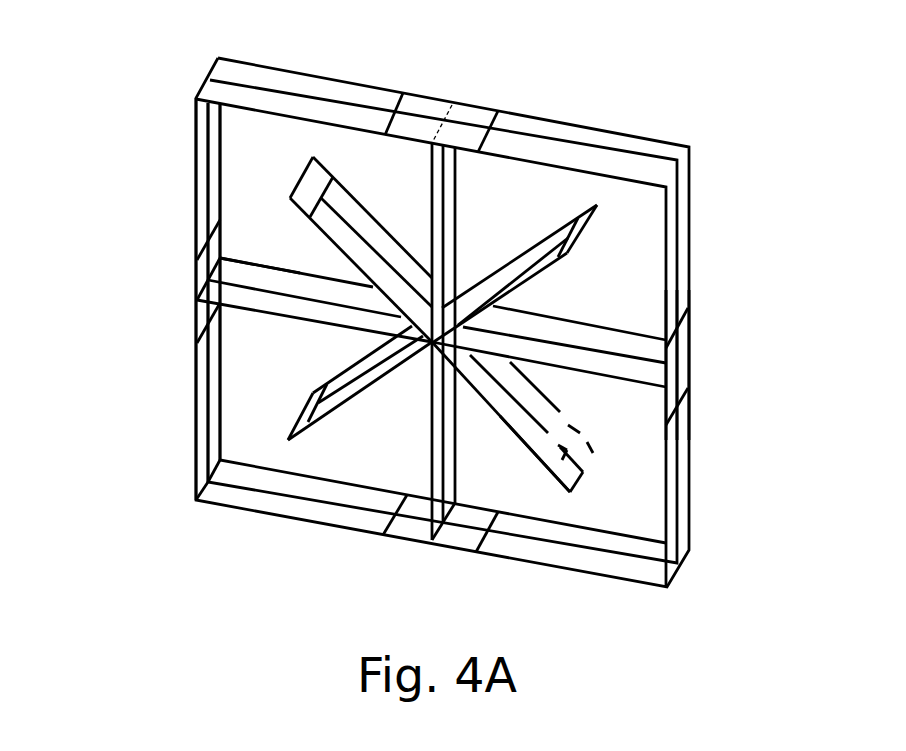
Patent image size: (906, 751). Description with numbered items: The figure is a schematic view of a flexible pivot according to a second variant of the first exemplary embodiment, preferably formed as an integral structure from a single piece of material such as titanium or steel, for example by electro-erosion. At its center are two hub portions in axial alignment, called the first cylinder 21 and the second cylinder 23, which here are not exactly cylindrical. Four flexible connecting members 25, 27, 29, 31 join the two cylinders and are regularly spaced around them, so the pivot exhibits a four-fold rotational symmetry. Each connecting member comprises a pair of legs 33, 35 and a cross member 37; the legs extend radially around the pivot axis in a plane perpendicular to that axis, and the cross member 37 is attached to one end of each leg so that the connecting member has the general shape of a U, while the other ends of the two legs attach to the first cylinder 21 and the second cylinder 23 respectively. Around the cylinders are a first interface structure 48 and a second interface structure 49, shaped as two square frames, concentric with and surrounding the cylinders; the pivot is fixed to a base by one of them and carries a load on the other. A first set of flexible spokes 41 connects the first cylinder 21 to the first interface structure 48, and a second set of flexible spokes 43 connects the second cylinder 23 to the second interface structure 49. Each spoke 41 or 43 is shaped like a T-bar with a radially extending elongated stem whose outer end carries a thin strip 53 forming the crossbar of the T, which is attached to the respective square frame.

The first cylinder 21 is at (432, 343).
The second cylinder 23 is at (433, 340).
The flexible connecting member 25 is at (507, 446).
The flexible connecting member 27 is at (583, 196).
The flexible connecting member 29 is at (347, 170).
The flexible connecting member 31 is at (302, 448).
The leg 33 is at (535, 440).
The leg 35 is at (553, 425).
The cross member 37 is at (573, 457).
The first set of flexible spokes 41 is at (290, 311).
The second set of flexible spokes 43 is at (290, 285).
The first interface structure 48 is at (203, 148).
The second interface structure 49 is at (217, 363).
The thin strip 53 is at (683, 333).